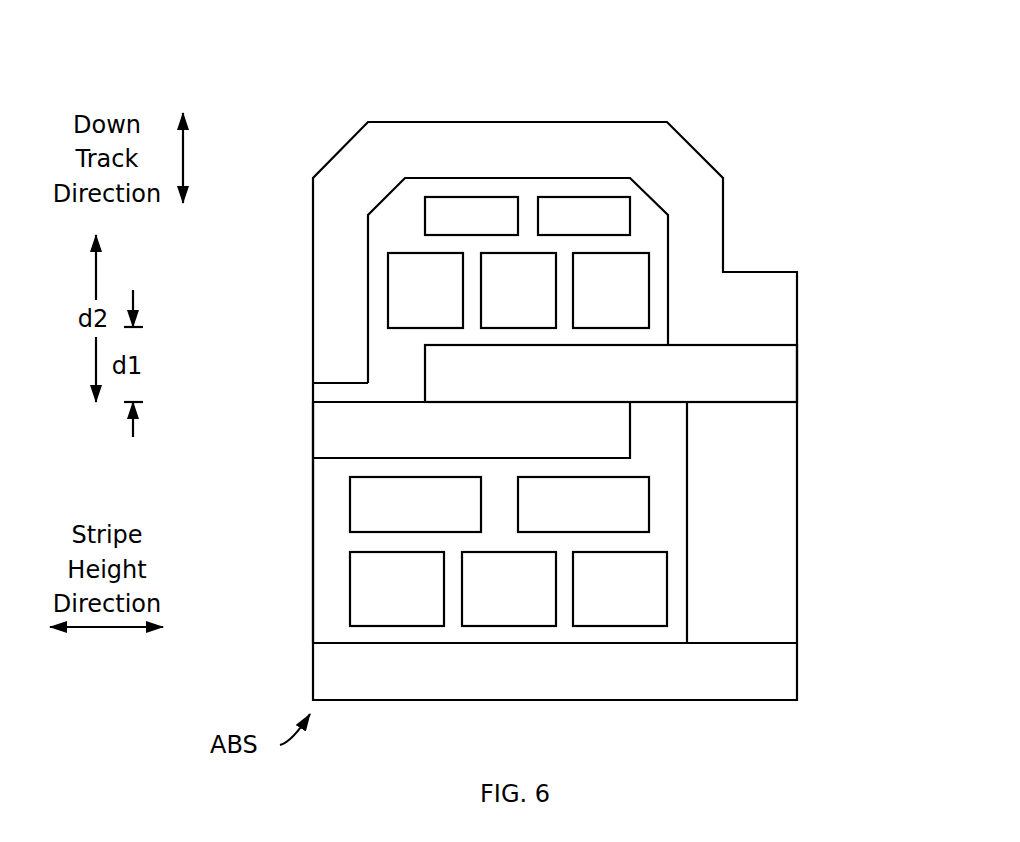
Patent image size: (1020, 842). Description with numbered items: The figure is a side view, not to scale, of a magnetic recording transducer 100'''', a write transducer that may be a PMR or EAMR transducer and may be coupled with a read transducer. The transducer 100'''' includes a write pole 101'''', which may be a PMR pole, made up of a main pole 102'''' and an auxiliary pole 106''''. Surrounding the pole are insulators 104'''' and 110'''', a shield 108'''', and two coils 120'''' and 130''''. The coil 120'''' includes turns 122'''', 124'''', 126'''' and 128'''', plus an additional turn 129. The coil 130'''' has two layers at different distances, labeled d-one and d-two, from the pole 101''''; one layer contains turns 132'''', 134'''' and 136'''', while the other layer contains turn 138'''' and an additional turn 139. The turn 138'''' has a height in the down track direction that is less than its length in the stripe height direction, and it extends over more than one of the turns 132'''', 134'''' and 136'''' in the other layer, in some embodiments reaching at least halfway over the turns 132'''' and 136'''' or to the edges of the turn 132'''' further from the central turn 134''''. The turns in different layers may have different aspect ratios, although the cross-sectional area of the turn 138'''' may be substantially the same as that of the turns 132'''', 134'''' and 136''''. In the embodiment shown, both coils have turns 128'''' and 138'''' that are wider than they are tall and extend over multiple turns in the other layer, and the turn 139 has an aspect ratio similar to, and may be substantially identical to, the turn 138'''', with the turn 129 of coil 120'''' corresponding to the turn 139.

The magnetic recording transducer 100'''' is at (555, 366).
The write pole 101'''' is at (240, 412).
The main pole 102'''' is at (520, 439).
The insulator 104'''' is at (517, 606).
The auxiliary pole 106'''' is at (779, 513).
The shield 108'''' is at (436, 280).
The insulator 110'''' is at (296, 356).
The coil 120'''' is at (272, 550).
The turn 122'''' is at (314, 625).
The turn 124'''' is at (599, 642).
The turn 126'''' is at (722, 582).
The turn 128'''' is at (343, 504).
The turn 129 is at (650, 532).
The coil 130'''' is at (611, 183).
The turn 132'''' is at (334, 265).
The turn 134'''' is at (658, 327).
The turn 136'''' is at (742, 283).
The turn 138'''' is at (371, 172).
The turn 139 is at (556, 197).